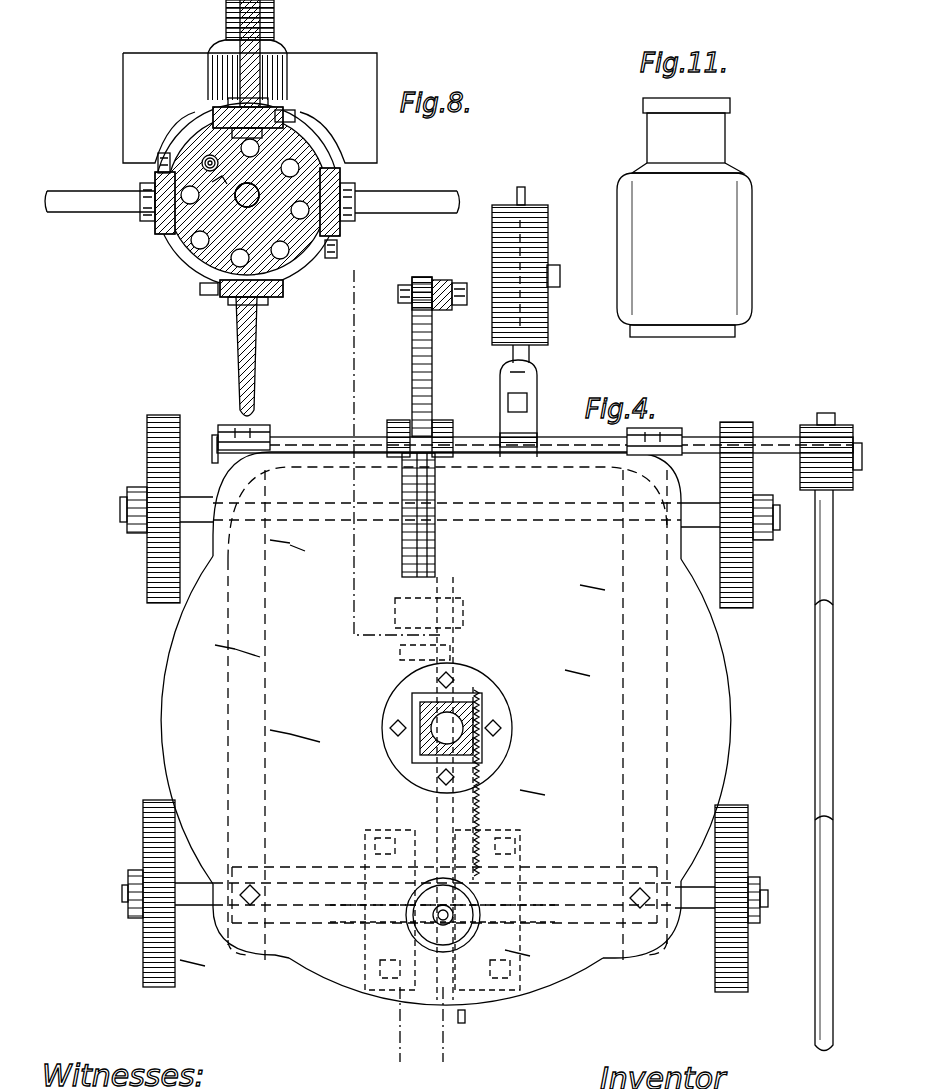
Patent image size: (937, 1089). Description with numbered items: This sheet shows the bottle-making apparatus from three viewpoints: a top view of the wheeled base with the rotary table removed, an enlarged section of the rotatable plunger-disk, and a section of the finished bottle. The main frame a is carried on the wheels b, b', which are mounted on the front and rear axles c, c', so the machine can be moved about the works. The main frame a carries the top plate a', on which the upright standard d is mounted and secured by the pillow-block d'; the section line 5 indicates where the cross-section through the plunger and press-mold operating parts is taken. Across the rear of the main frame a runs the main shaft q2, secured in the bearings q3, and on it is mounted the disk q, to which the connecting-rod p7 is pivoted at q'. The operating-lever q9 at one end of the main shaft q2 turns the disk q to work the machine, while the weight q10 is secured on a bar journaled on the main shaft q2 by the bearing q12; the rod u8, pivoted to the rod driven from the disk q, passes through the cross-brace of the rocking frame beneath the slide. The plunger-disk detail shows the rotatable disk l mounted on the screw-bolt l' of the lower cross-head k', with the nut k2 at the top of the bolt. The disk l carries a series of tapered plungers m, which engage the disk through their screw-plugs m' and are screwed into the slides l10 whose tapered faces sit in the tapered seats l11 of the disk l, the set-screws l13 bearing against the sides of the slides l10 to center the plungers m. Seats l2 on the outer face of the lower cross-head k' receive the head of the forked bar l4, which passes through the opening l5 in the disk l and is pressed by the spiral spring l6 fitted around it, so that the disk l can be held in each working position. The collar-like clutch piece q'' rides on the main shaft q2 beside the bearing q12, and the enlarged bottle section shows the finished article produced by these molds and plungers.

In FIG. 8, the lower cross-head k' is at (250, 101).
In FIG. 8, the adjusting nut k2 is at (226, 22).
In FIG. 8, the rotatable disk l is at (247, 206).
In FIG. 8, the screw-bolt l' is at (256, 202).
In FIG. 8, the seats l2 is at (285, 245).
In FIG. 8, the forked bar l4 is at (245, 198).
In FIG. 8, the opening l5 is at (219, 187).
In FIG. 8, the spiral spring l6 is at (203, 167).
In FIG. 8, the slides l10 is at (240, 300).
In FIG. 8, the seats l11 is at (215, 112).
In FIG. 8, the set-screws l13 is at (163, 160).
In FIG. 8, the tapered plungers m is at (252, 208).
In FIG. 8, the screw-plugs m' is at (235, 197).
In FIG. 4, the main frame a is at (446, 728).
In FIG. 4, the top plate a' is at (430, 716).
In FIG. 4, the wheels b is at (441, 896).
In FIG. 4, the wheels b' is at (455, 503).
In FIG. 4, the front axle c is at (445, 897).
In FIG. 4, the rear axle c' is at (450, 498).
In FIG. 4, the upright standard d is at (411, 728).
In FIG. 4, the pillow-block d' is at (461, 728).
In FIG. 4, the disk q is at (419, 427).
In FIG. 4, the pivot q' is at (422, 299).
In FIG. 4, the clutch member q'' is at (503, 401).
In FIG. 4, the main shaft q2 is at (328, 437).
In FIG. 4, the bearings q3 is at (222, 427).
In FIG. 4, the operating-lever q9 is at (815, 555).
In FIG. 4, the weight q10 is at (548, 245).
In FIG. 4, the bearing q12 is at (538, 440).
In FIG. 4, the connecting-rod p7 is at (445, 282).
In FIG. 4, the rod u8 is at (462, 1023).
In FIG. 4, the section line 5 is at (399, 668).